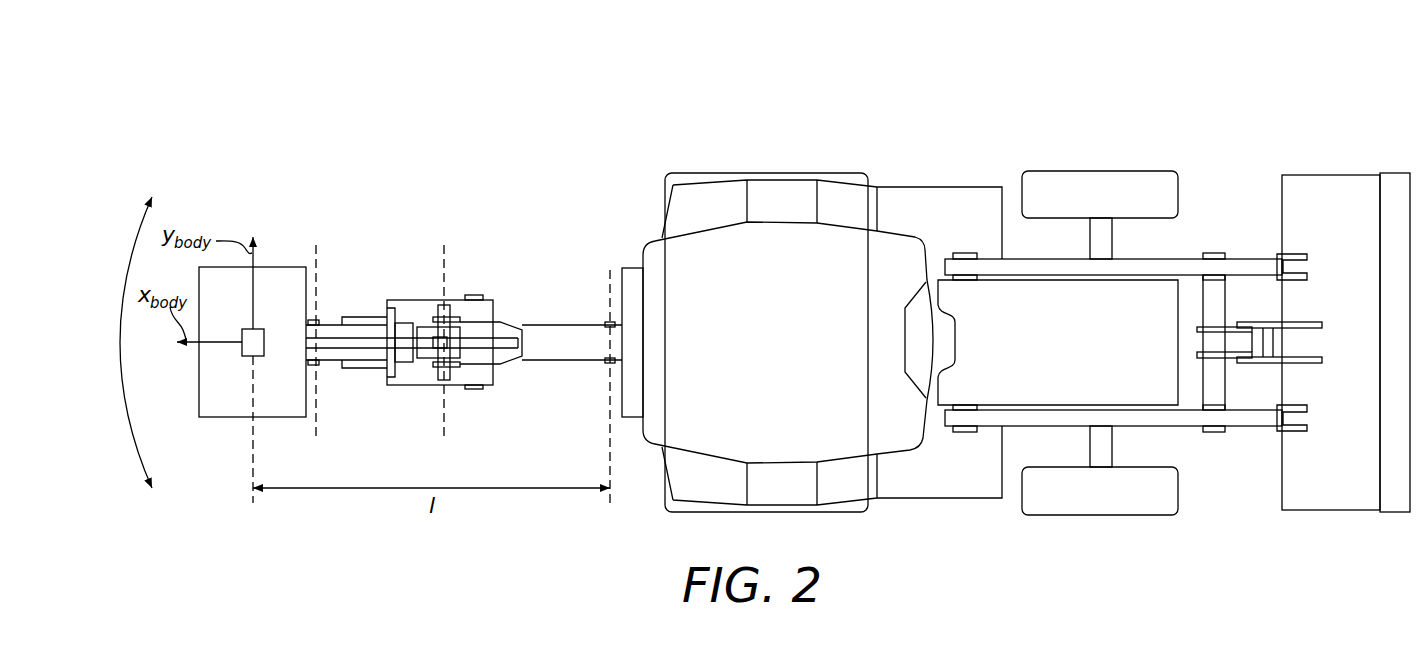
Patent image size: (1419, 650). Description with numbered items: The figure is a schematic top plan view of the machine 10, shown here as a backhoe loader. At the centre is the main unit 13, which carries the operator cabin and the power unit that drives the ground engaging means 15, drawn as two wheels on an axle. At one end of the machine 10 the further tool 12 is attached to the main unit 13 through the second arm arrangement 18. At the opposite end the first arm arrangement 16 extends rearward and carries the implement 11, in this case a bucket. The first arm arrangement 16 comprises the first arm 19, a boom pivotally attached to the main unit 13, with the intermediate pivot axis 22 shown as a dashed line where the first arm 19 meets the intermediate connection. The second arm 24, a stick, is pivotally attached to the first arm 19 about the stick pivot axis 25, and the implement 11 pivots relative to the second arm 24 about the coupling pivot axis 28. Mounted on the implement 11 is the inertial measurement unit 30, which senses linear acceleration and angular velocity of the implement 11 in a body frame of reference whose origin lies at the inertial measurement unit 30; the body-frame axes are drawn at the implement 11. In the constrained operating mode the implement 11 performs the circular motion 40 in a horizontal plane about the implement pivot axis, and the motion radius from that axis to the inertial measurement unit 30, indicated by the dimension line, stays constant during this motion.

The machine 10 is at (990, 97).
The implement 11 is at (220, 418).
The further tool 12 is at (1325, 513).
The main unit 13 is at (837, 240).
The ground engaging means 15 is at (1157, 170).
The first arm arrangement 16 is at (467, 238).
The second arm arrangement 18 is at (1222, 237).
The first arm 19 is at (500, 340).
The intermediate pivot axis 22 is at (610, 430).
The second arm 24 is at (357, 340).
The stick pivot axis 25 is at (444, 430).
The coupling pivot axis 28 is at (316, 430).
The inertial measurement unit 30 is at (253, 357).
The circular motion 40 is at (138, 236).